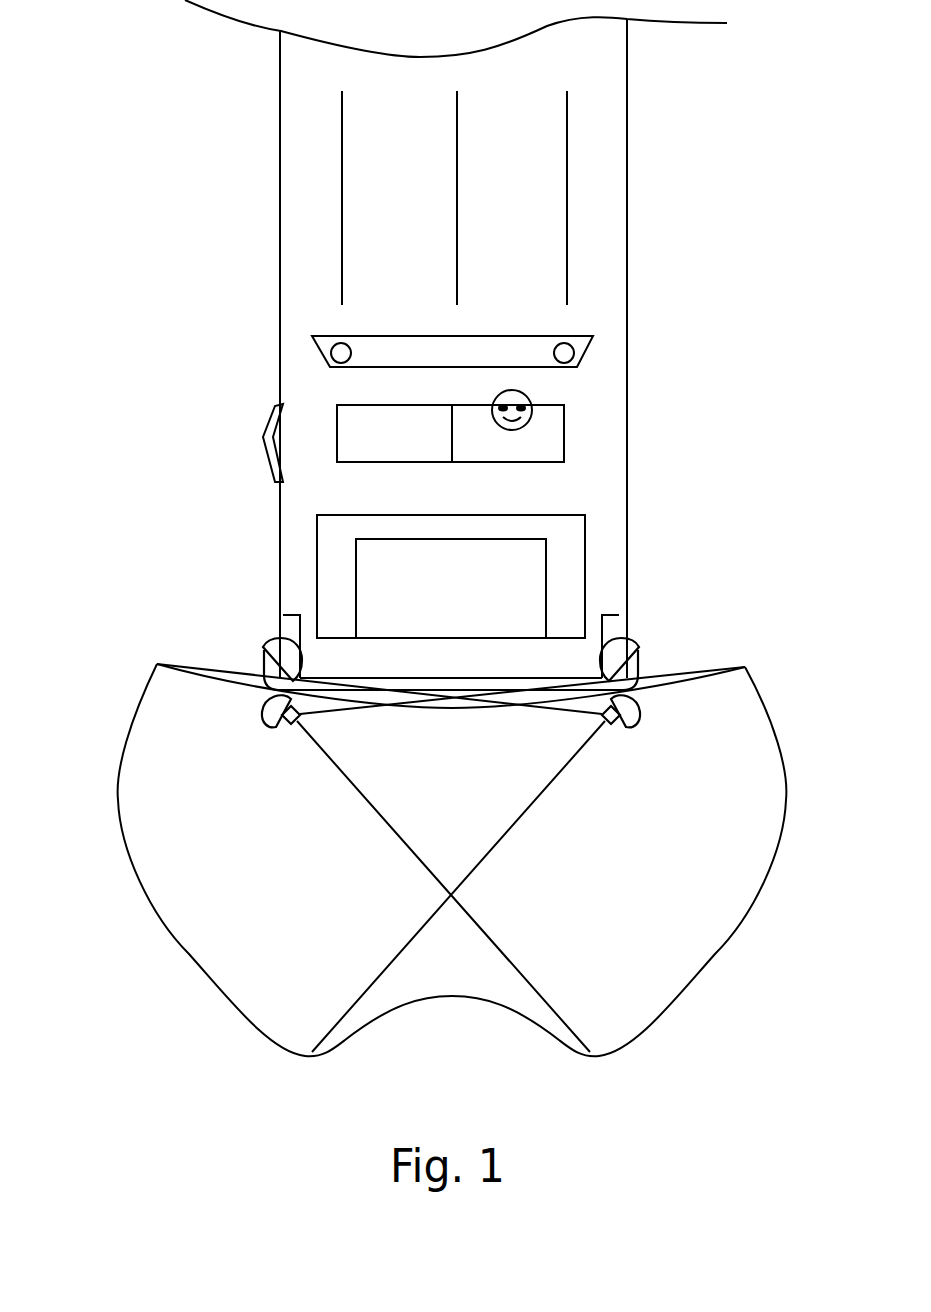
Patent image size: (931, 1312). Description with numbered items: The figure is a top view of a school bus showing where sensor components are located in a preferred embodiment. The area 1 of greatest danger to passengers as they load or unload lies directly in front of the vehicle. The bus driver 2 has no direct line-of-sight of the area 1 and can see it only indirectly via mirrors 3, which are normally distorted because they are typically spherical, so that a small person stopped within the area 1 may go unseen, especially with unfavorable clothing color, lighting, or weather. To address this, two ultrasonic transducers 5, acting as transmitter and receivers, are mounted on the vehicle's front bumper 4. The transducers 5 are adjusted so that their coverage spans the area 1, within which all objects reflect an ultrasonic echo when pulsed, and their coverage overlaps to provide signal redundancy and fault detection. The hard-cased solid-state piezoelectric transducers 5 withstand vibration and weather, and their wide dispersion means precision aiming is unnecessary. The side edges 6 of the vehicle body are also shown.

The area of greatest danger 1 is at (673, 969).
The bus driver 2 is at (530, 398).
The mirrors 3 is at (272, 648).
The front bumper 4 is at (627, 649).
The ultrasonic transducers 5 is at (272, 713).
The upper garment side edges 6 is at (281, 187).